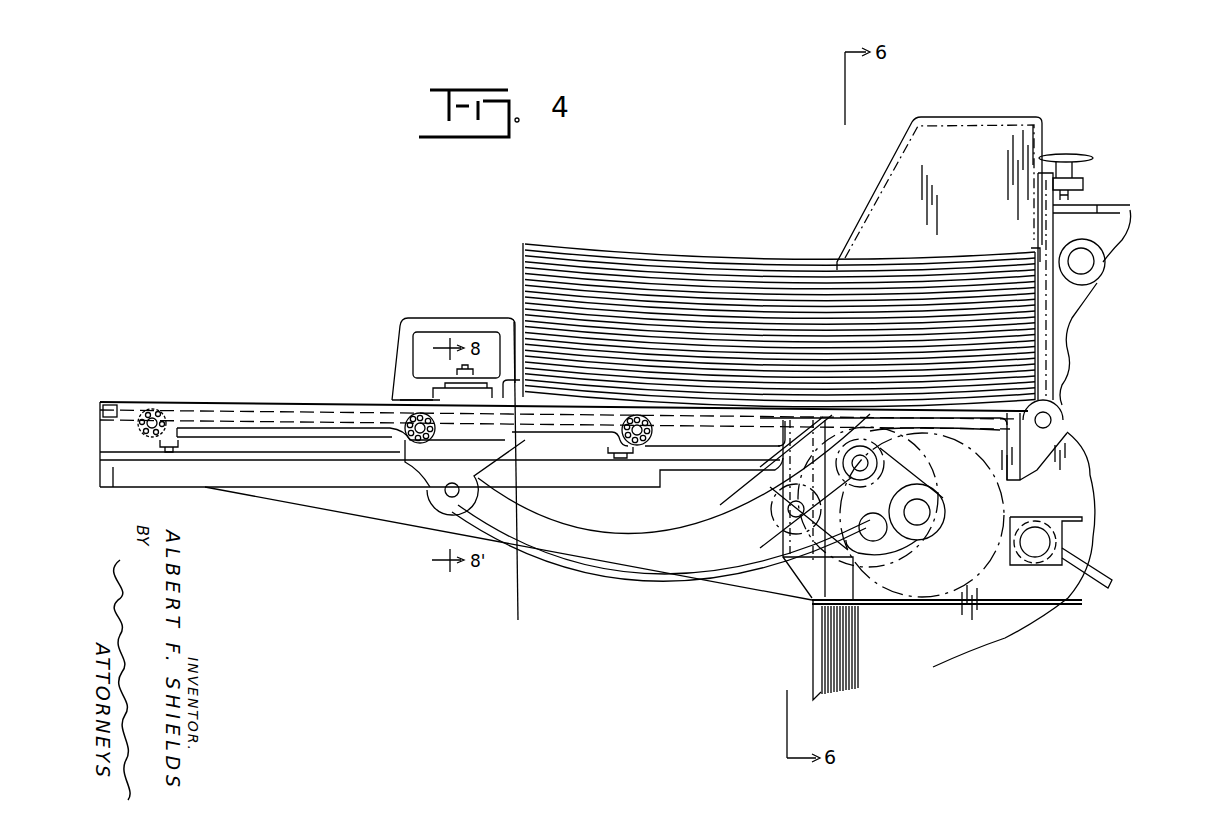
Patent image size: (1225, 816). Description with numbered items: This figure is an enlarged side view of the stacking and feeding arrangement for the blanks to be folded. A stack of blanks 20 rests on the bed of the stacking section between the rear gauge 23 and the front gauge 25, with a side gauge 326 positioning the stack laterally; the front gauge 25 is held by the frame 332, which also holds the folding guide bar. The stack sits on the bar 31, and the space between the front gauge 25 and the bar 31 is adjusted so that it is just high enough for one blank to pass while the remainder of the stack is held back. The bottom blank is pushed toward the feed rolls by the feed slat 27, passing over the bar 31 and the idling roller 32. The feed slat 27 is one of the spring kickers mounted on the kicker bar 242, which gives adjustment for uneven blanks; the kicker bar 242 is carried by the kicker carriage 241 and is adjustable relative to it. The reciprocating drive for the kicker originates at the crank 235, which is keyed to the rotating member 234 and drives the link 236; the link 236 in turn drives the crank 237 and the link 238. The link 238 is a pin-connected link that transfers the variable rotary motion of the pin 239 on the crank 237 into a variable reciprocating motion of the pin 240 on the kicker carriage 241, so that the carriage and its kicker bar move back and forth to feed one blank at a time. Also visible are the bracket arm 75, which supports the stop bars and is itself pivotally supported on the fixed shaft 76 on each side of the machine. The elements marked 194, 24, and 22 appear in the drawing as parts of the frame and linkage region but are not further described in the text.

The end stop 194 is at (112, 403).
The rear gauge 23 is at (405, 322).
The pad 24 is at (512, 390).
The kicker bar 242 is at (440, 394).
The kicker carriage 241 is at (480, 452).
The pin 240 is at (448, 496).
The stack of blanks 20 is at (523, 273).
The side gauge 326 is at (975, 118).
The front gauge 25 is at (1088, 166).
The frame 332 is at (1120, 212).
The bar 31 is at (1068, 421).
The idling roller 32 is at (1070, 414).
The feed slat 27 is at (517, 483).
The arm 22 is at (725, 417).
The link 238 is at (648, 572).
The pin 239 is at (793, 525).
The crank 235 is at (875, 455).
The crank 237 is at (868, 522).
The shaft 234 is at (920, 522).
The link 236 is at (1000, 431).
The fixed shaft 76 is at (1040, 542).
The bracket arm 75 is at (1104, 592).